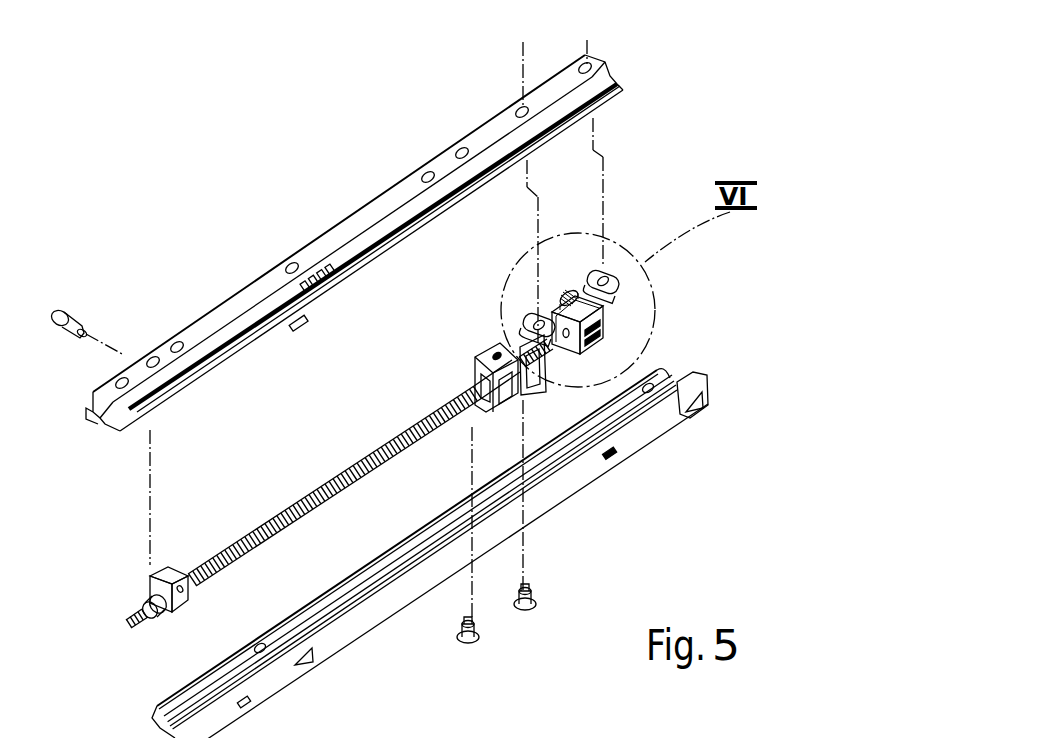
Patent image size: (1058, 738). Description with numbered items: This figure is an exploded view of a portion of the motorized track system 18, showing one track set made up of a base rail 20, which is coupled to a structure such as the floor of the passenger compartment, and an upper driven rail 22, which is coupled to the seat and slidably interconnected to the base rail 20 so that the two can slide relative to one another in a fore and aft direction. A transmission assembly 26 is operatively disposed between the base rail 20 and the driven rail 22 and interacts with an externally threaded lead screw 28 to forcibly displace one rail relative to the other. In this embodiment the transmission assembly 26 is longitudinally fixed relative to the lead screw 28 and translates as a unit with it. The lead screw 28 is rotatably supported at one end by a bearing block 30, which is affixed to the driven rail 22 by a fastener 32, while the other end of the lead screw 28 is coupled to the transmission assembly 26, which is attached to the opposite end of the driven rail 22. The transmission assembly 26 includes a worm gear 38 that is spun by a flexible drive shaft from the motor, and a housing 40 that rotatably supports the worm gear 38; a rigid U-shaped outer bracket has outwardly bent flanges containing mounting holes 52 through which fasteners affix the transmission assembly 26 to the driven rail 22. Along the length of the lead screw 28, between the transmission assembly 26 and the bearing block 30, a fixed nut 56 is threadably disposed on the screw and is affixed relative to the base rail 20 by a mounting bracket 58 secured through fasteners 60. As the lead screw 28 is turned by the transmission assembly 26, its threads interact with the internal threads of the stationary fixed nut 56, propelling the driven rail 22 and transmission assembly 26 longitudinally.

The track system 18 is at (663, 140).
The base rail 20 is at (343, 635).
The driven rail 22 is at (320, 248).
The transmission assembly 26 is at (620, 298).
The lead screw 28 is at (350, 472).
The bearing block 30 is at (188, 611).
The fastener 32 is at (76, 303).
The worm gear 38 is at (569, 292).
The housing 40 is at (612, 324).
The mounting holes 52 is at (606, 273).
The fixed nut 56 is at (512, 378).
The mounting bracket 58 is at (460, 425).
The fasteners 60 is at (528, 613).